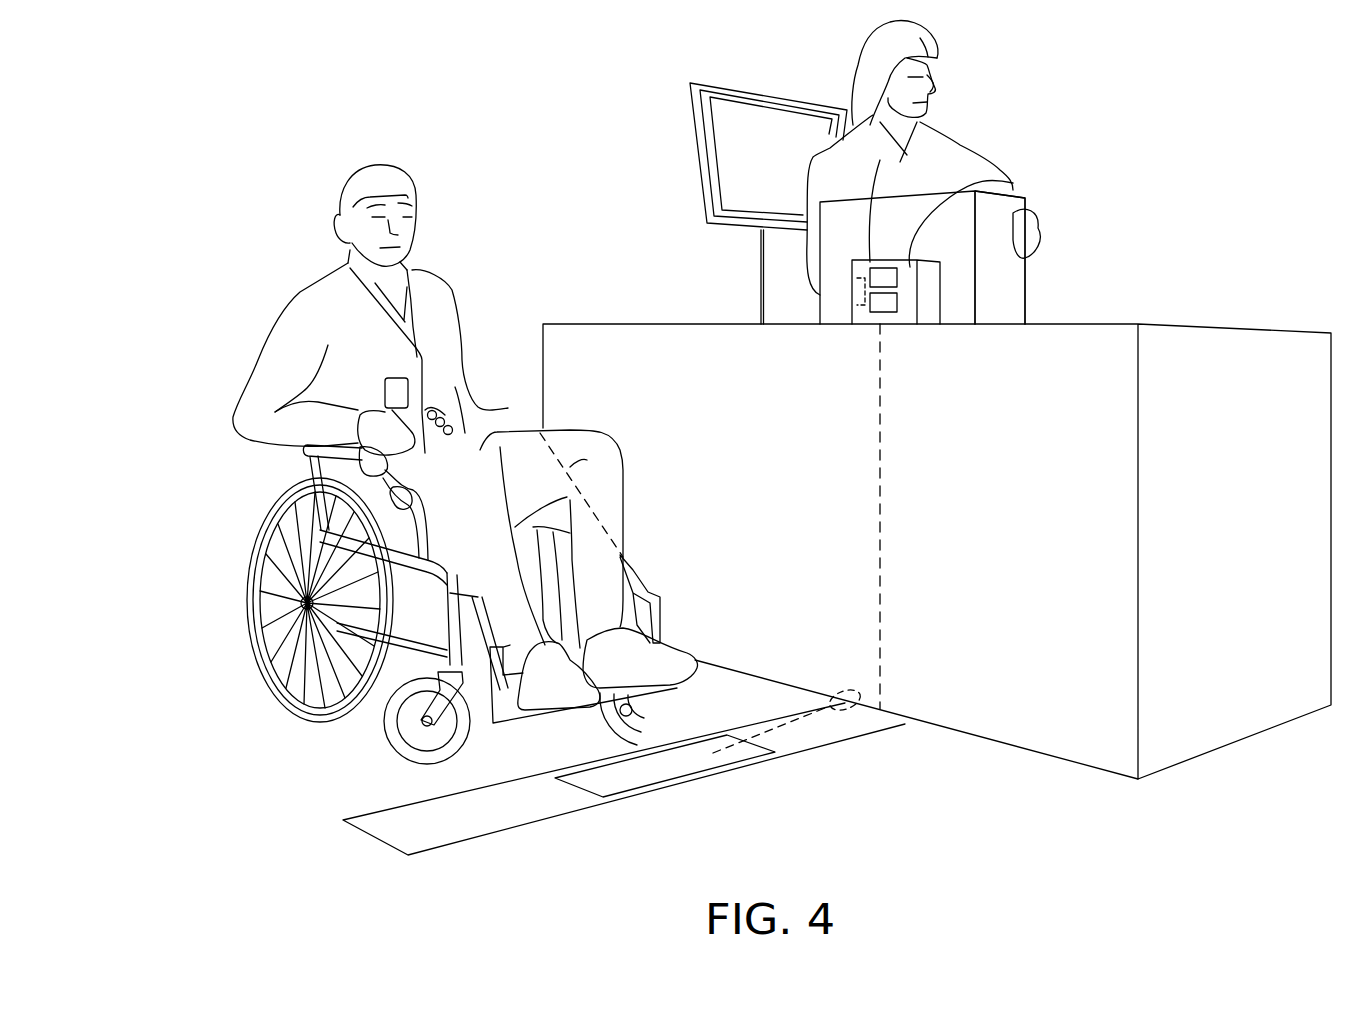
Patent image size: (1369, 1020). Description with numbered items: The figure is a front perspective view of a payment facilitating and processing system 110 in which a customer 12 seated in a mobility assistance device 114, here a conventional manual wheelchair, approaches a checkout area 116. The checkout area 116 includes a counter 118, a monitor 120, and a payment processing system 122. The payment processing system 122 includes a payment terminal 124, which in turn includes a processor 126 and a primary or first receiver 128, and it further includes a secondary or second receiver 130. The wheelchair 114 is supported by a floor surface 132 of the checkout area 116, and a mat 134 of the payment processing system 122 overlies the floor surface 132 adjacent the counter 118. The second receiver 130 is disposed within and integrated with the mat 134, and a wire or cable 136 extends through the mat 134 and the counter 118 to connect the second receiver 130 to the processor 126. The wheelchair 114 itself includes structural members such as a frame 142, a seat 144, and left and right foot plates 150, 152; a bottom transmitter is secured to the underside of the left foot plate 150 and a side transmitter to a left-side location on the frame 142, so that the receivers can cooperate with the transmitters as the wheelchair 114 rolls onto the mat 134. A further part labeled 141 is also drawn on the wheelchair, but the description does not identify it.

The customer 12 is at (329, 170).
The payment facilitating and processing system 110 is at (962, 215).
The mobility assistance device 114 is at (242, 522).
The checkout area 116 is at (553, 192).
The counter 118 is at (1238, 358).
The monitor 120 is at (755, 123).
The payment processing system 122 is at (957, 294).
The payment terminal 124 is at (954, 224).
The processor 126 is at (880, 277).
The first receiver 128 is at (880, 302).
The second receiver 130 is at (672, 758).
The floor surface 132 is at (821, 799).
The mat 134 is at (453, 820).
The cable 136 is at (865, 717).
The caster wheel 141 is at (405, 665).
The frame 142 is at (305, 605).
The seat 144 is at (572, 537).
The left foot plate 150 is at (670, 692).
The right foot plate 152 is at (527, 723).